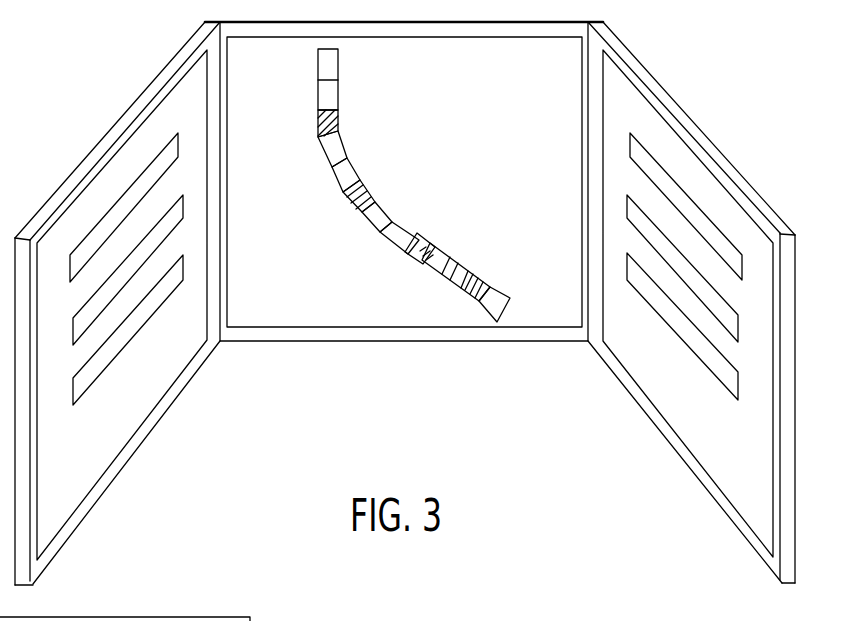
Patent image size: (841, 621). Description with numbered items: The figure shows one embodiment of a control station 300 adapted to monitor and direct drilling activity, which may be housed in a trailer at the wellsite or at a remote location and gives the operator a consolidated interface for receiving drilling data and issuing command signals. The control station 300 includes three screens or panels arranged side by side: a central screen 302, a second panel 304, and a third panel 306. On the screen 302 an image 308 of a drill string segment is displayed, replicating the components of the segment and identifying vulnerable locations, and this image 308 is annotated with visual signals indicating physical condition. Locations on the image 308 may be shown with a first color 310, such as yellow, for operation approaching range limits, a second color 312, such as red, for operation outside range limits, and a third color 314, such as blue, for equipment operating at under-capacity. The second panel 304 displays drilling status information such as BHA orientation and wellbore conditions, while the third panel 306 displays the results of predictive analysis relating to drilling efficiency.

The control station 300 is at (405, 303).
The screen 302 is at (404, 210).
The second panel 304 is at (153, 417).
The third panel 306 is at (691, 302).
The image 308 is at (479, 178).
The first color 310 is at (508, 273).
The second color 312 is at (395, 268).
The third color 314 is at (388, 174).